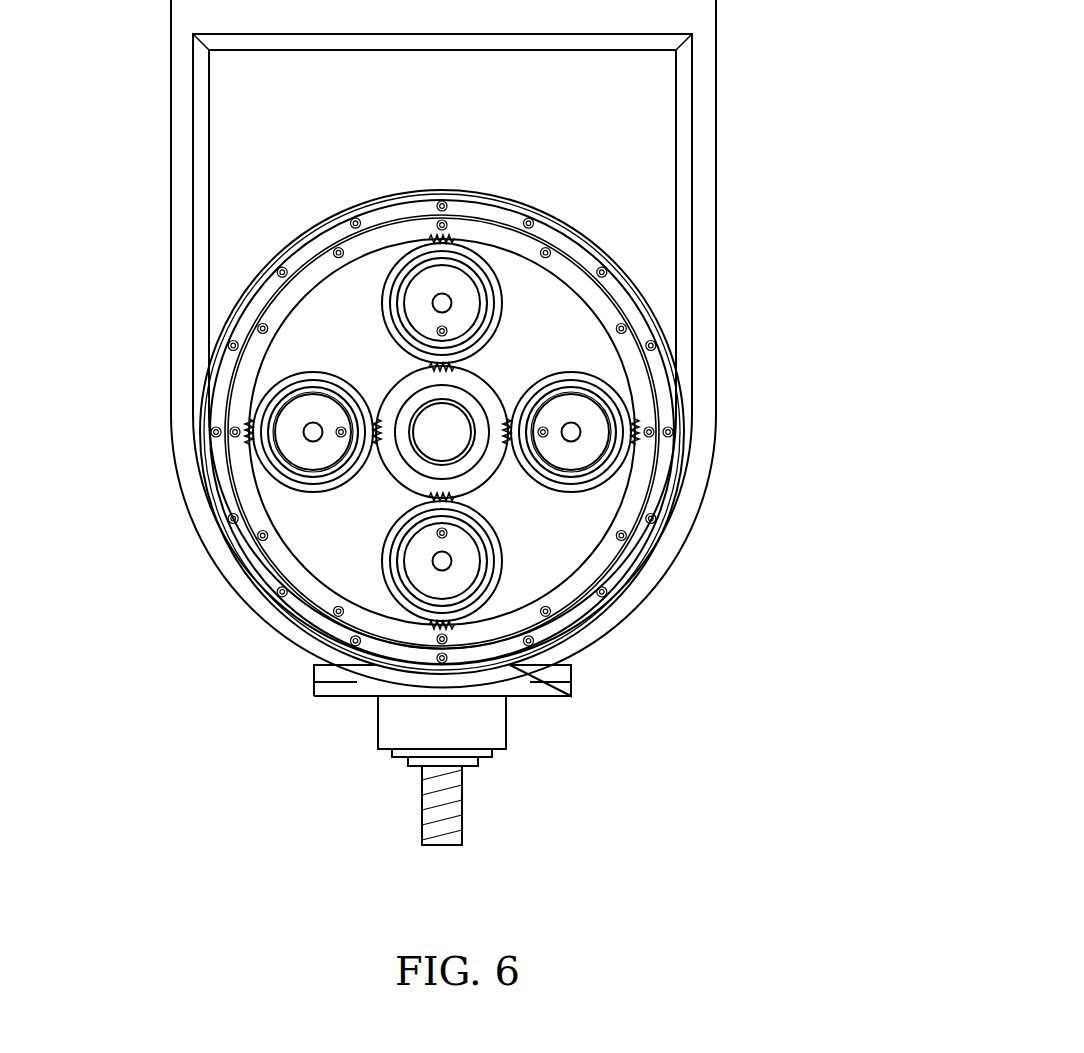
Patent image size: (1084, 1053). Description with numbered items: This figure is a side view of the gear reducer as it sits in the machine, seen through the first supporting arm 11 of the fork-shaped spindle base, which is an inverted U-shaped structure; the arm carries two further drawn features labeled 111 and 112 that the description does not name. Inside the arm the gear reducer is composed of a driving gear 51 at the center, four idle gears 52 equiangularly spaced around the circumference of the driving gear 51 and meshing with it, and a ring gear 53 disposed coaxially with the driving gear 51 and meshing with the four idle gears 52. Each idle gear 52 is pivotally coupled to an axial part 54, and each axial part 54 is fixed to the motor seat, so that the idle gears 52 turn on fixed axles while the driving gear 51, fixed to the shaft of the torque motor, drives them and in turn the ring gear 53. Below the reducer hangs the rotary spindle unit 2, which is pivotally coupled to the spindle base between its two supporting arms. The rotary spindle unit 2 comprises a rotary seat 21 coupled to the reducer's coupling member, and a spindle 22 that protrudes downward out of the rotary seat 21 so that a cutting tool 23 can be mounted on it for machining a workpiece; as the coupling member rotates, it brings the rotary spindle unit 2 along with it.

The rotary spindle unit 2 is at (512, 771).
The first supporting arm 11 is at (716, 173).
The housing frame 111 is at (650, 116).
The mounting ring 112 is at (625, 268).
The rotary seat 21 is at (577, 683).
The spindle 22 is at (500, 728).
The cutting tool 23 is at (462, 820).
The driving gear 51 is at (490, 390).
The idle gear 52 is at (405, 265).
The ring gear 53 is at (575, 555).
The axial part 54 is at (293, 420).